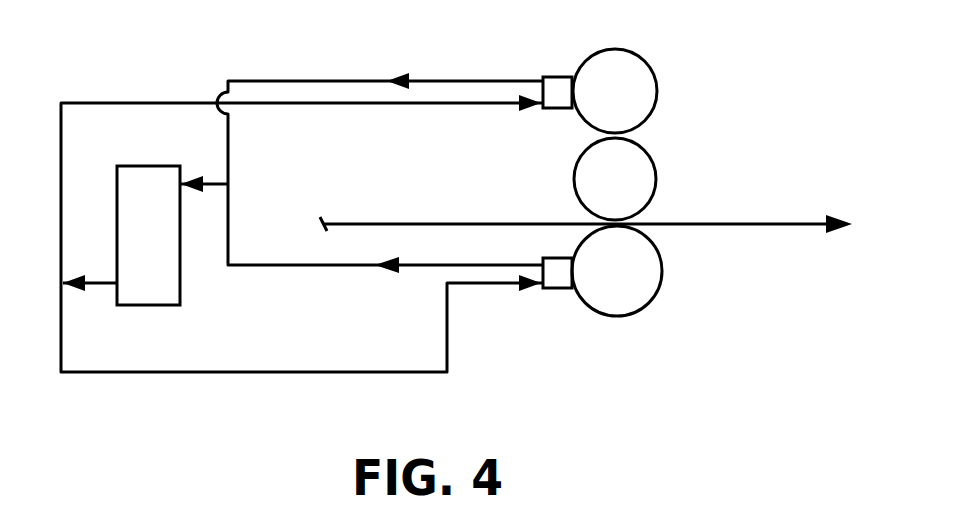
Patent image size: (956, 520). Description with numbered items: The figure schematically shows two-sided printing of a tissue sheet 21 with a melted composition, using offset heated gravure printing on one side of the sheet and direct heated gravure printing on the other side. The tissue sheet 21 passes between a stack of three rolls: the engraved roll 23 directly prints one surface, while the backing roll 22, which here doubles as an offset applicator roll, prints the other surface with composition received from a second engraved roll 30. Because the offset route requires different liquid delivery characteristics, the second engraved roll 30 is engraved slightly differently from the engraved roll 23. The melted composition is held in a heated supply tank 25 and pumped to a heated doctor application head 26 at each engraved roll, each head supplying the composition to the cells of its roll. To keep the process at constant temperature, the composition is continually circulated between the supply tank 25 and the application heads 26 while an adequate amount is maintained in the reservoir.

The tissue sheet 21 is at (416, 222).
The backing roll 22 is at (657, 168).
The engraved roll 23 is at (657, 292).
The heated supply tank 25 is at (163, 305).
The heated doctor application head 26 is at (557, 72).
The second engraved roll 30 is at (653, 67).